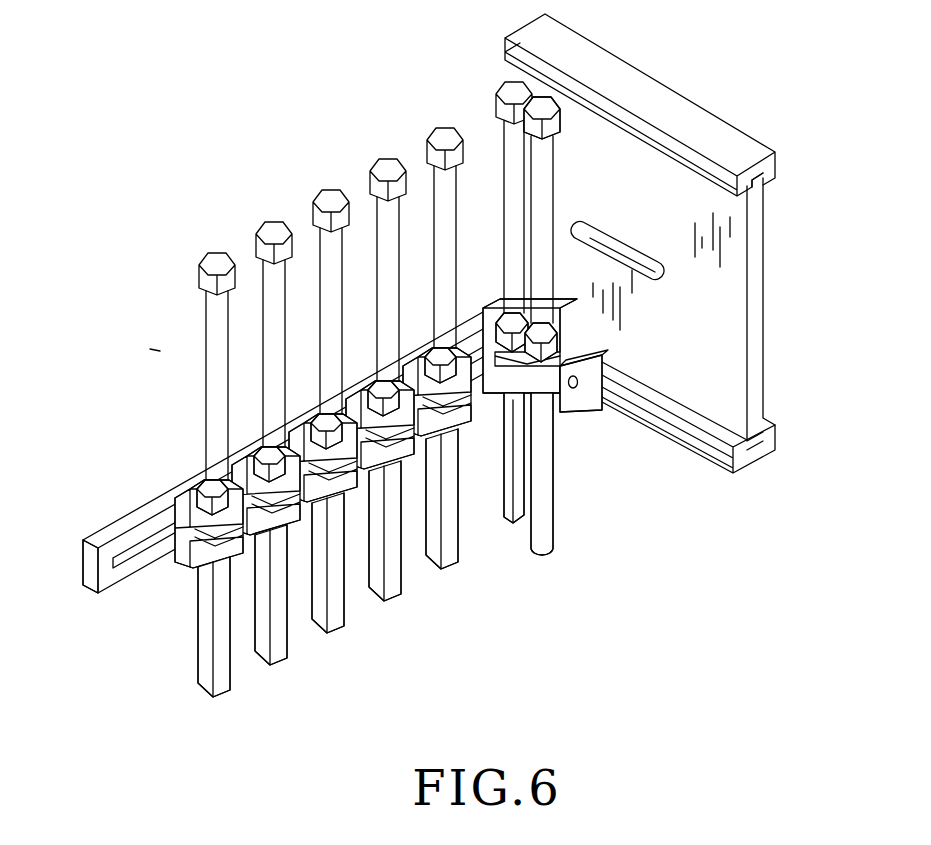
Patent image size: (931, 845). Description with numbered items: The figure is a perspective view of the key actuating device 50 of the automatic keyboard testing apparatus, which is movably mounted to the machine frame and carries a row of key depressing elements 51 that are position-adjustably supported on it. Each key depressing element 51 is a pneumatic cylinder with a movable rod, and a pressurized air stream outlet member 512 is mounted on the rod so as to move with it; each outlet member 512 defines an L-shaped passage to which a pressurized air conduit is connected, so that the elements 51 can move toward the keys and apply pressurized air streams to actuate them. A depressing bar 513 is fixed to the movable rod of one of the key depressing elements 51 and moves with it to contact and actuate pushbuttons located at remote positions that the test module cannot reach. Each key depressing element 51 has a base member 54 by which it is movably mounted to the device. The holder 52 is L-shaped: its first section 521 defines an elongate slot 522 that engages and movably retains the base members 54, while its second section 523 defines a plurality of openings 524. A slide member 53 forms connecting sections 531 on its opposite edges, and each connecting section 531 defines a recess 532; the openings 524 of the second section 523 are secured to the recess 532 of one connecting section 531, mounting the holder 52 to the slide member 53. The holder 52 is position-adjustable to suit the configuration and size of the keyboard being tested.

The key actuating device 50 is at (166, 352).
The key depressing element 51 is at (216, 318).
The pressurized air stream outlet member 512 is at (214, 700).
The depressing bar 513 is at (541, 500).
The holder 52 is at (251, 484).
The first section 521 is at (92, 578).
The elongate slot 522 is at (125, 562).
The second section 523 is at (700, 414).
The opening 524 is at (576, 389).
The slide member 53 is at (674, 285).
The connecting section 531 is at (667, 103).
The recess 532 is at (762, 175).
The base member 54 is at (420, 350).